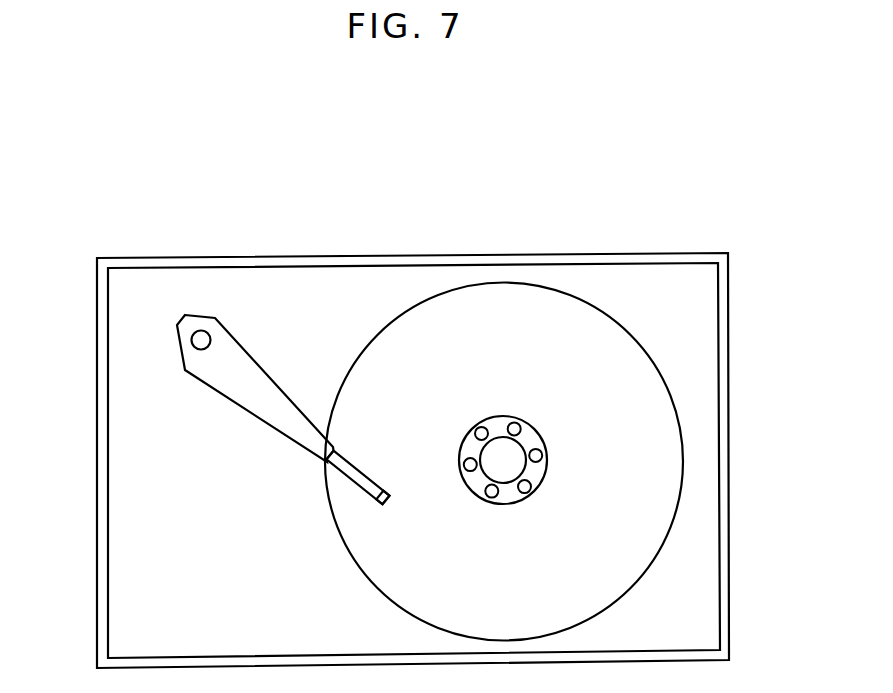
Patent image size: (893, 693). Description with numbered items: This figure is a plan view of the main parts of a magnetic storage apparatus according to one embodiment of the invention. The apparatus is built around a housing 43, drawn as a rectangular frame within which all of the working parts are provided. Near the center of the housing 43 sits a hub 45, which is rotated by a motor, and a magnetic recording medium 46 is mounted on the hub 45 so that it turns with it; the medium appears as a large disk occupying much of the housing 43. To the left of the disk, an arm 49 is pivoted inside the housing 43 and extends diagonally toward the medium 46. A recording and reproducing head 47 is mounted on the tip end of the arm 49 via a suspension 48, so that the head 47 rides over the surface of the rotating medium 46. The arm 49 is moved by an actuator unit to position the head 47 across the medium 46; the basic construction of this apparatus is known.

The housing 43 is at (726, 642).
The hub 45 is at (537, 437).
The magnetic recording medium 46 is at (553, 305).
The recording and reproducing head 47 is at (390, 490).
The suspension 48 is at (353, 466).
The arm 49 is at (235, 402).